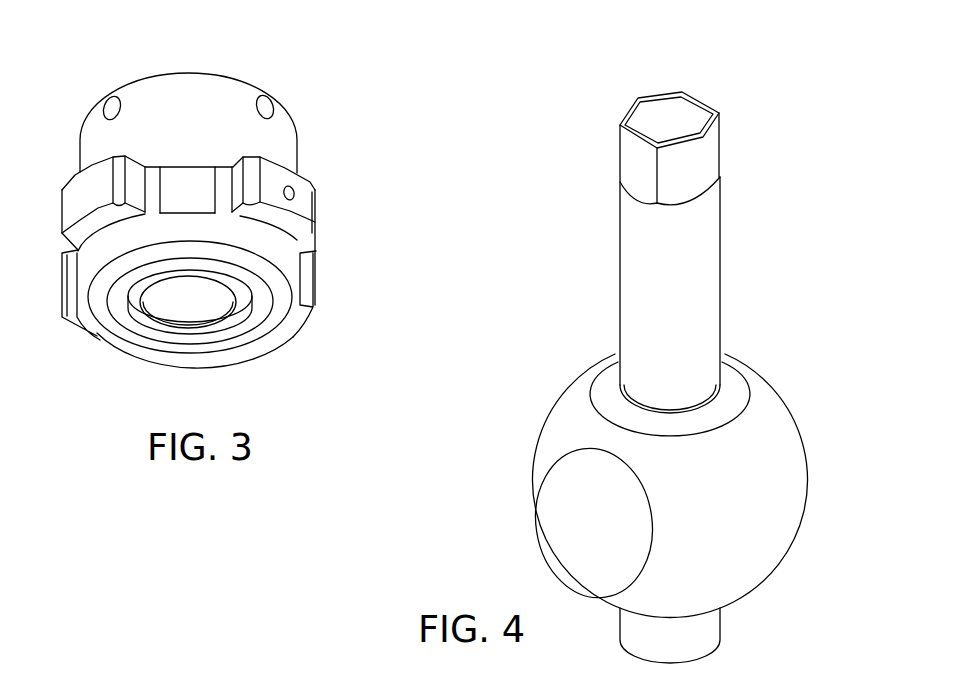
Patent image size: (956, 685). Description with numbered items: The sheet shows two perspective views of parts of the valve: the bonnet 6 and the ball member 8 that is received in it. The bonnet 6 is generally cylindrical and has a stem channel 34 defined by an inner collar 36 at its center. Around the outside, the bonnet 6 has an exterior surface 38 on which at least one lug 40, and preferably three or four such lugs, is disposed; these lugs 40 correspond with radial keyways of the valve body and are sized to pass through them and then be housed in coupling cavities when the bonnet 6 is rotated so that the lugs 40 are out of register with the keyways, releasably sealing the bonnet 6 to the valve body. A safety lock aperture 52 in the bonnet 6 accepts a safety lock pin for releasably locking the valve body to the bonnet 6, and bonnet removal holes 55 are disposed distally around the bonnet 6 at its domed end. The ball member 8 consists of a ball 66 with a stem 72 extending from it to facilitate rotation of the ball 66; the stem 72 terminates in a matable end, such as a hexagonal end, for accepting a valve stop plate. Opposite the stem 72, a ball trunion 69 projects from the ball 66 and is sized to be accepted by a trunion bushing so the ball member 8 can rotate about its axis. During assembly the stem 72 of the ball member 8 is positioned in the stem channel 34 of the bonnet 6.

In FIG. 3, the bonnet 6 is at (298, 147).
In FIG. 3, the bonnet removal holes 55 is at (255, 97).
In FIG. 3, the exterior surface 38 is at (280, 160).
In FIG. 3, the safety lock aperture 52 is at (295, 193).
In FIG. 3, the lug 40 is at (317, 233).
In FIG. 3, the inner collar 36 is at (133, 317).
In FIG. 3, the stem channel 34 is at (217, 303).
In FIG. 4, the stem 72 is at (713, 272).
In FIG. 4, the ball member 8 is at (780, 422).
In FIG. 4, the ball 66 is at (778, 503).
In FIG. 4, the ball trunion 69 is at (720, 622).